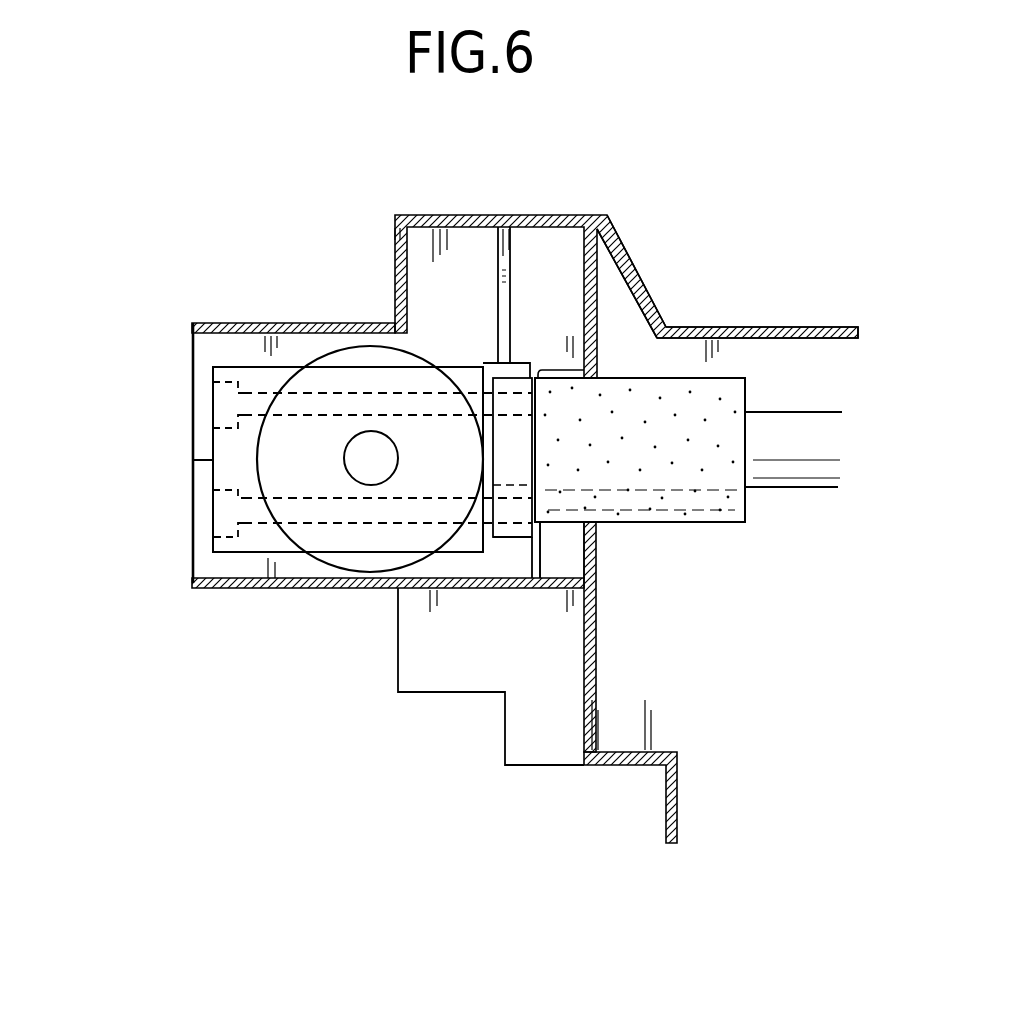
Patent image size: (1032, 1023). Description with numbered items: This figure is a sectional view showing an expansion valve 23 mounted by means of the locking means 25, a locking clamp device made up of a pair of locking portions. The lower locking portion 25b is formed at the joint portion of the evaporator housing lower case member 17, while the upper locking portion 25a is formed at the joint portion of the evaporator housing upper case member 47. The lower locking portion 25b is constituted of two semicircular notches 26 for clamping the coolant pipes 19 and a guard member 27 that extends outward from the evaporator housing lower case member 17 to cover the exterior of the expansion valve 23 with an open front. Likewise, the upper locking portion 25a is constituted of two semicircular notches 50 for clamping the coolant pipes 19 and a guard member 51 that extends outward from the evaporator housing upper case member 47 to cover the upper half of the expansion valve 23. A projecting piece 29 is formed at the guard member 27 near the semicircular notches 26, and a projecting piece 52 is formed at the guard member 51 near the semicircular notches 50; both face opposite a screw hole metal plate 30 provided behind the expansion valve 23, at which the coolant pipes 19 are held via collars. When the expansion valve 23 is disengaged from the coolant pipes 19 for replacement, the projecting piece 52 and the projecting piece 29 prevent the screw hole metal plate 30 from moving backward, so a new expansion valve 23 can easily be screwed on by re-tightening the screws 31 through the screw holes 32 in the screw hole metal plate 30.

The evaporator housing lower case member 17 is at (622, 767).
The coolant pipes 19 is at (806, 425).
The expansion valve 23 is at (283, 463).
The locking means 25 is at (152, 325).
The upper locking portion 25a is at (228, 343).
The lower locking portion 25b is at (250, 572).
The semicircular notches 26 is at (567, 592).
The guard member 27 is at (297, 563).
The projecting piece 29 is at (543, 550).
The screw hole metal plate 30 is at (522, 552).
The screws 31 is at (222, 404).
The screw holes 32 is at (505, 392).
The evaporator housing upper case member 47 is at (750, 330).
The semicircular notches 50 is at (588, 370).
The guard member 51 is at (300, 345).
The projecting piece 52 is at (536, 372).